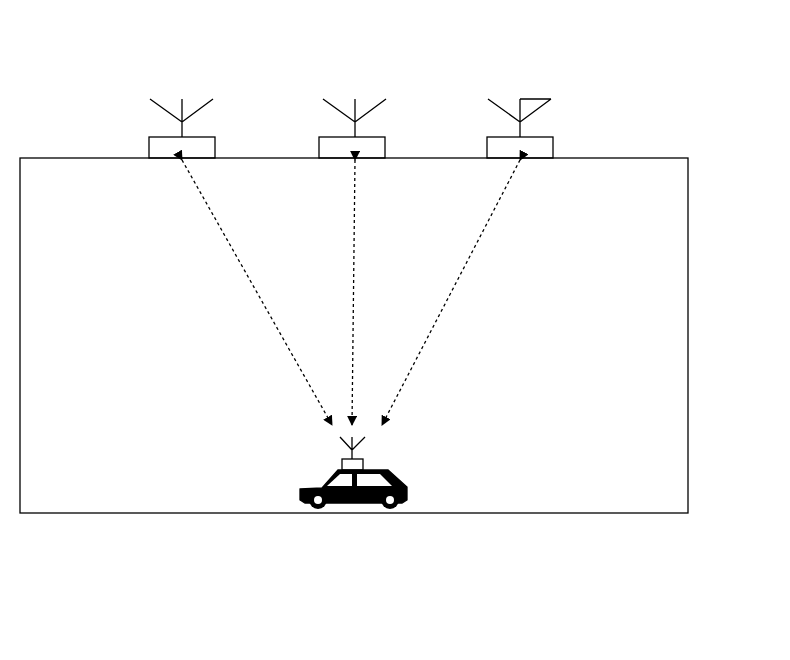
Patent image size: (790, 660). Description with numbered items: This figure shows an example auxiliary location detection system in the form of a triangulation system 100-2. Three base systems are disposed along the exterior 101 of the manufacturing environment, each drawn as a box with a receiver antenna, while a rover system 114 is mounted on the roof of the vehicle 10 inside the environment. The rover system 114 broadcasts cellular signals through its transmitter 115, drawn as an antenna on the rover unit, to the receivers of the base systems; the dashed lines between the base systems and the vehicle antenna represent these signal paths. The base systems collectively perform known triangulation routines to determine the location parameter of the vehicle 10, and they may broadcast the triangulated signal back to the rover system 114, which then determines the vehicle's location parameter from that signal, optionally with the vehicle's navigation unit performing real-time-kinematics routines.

The triangulation system 100-2 is at (681, 108).
The exterior 101 is at (598, 158).
The rover system 114 is at (342, 464).
The transmitter 115 is at (376, 450).
The vehicle 10 is at (407, 488).